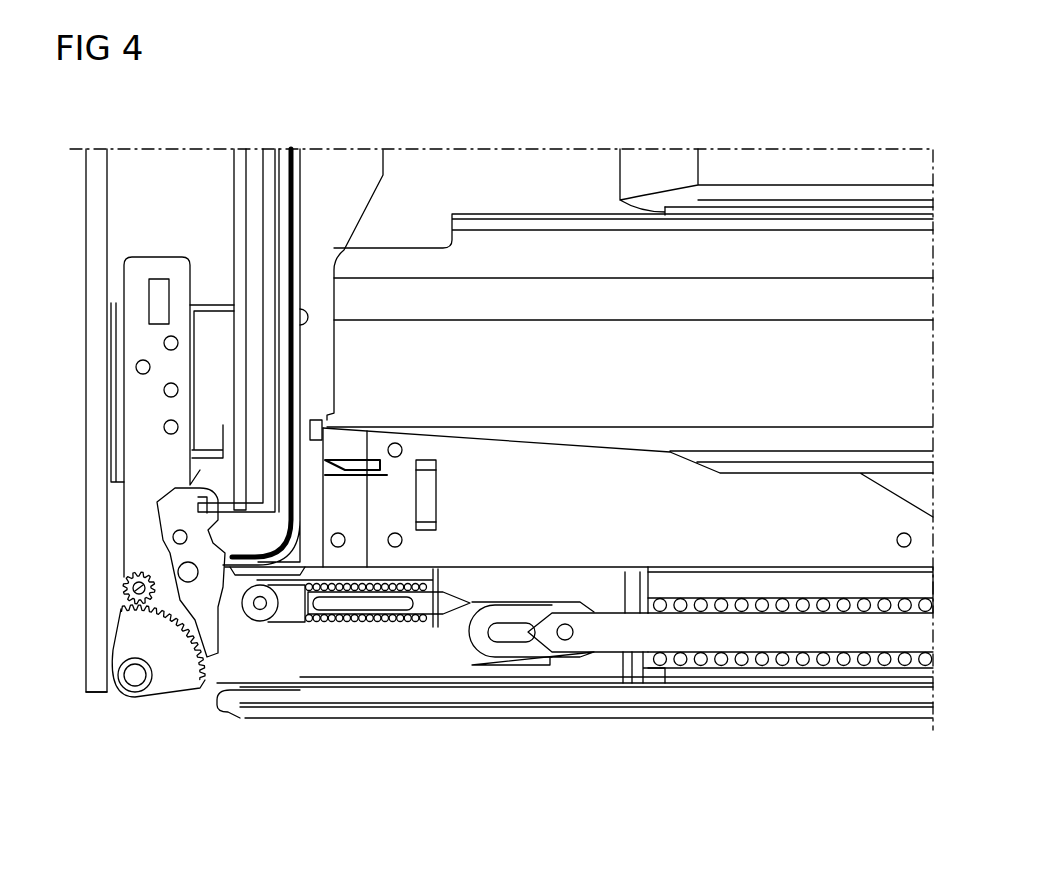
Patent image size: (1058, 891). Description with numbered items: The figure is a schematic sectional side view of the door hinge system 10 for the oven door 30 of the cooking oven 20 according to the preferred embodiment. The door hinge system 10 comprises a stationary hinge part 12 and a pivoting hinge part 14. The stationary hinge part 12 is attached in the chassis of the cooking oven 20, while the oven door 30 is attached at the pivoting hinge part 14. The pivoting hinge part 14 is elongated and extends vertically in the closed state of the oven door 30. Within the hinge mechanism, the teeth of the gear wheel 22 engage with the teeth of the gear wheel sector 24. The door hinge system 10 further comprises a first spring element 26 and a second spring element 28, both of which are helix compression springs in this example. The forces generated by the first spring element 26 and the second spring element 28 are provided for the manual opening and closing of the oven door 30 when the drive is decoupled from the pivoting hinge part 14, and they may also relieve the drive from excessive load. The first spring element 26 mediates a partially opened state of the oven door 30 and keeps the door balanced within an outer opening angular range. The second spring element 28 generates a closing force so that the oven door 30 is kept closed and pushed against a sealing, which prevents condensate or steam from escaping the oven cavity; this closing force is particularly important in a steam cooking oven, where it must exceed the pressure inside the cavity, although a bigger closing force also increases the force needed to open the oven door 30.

The door hinge system 10 is at (121, 716).
The stationary hinge part 12 is at (460, 630).
The pivoting hinge part 14 is at (148, 341).
The cooking oven 20 is at (866, 116).
The gear wheel 22 is at (127, 584).
The gear wheel sector 24 is at (150, 633).
The first spring element 26 is at (737, 662).
The second spring element 28 is at (367, 622).
The oven door 30 is at (148, 200).